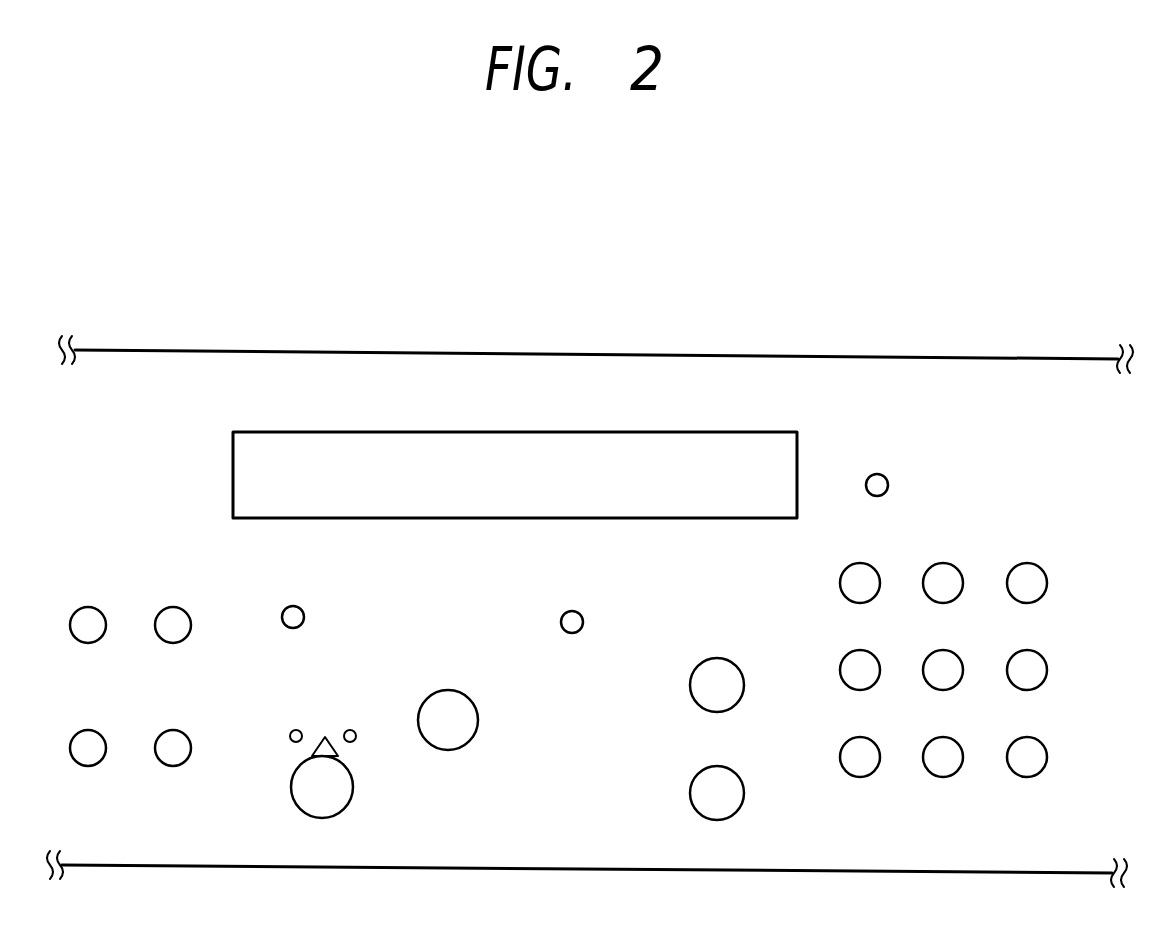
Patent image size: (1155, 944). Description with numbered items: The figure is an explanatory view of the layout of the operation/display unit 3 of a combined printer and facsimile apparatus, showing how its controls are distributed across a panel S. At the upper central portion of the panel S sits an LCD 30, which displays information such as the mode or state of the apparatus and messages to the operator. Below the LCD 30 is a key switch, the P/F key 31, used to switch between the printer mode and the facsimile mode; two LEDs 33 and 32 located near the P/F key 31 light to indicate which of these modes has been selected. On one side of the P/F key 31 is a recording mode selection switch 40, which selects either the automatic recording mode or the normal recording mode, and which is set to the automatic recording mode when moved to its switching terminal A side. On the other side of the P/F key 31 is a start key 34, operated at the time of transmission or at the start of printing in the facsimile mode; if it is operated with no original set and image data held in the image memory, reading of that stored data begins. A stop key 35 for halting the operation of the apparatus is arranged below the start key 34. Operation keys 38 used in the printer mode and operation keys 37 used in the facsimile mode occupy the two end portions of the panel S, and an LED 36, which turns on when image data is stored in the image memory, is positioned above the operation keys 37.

The operation/display unit 3 is at (533, 323).
The panel S is at (850, 390).
The LCD 30 is at (677, 432).
The key switch (P/F key) 31 is at (450, 751).
The LED 32 is at (581, 613).
The LED 33 is at (302, 608).
The start key 34 is at (723, 659).
The stop key 35 is at (690, 795).
The LED 36 is at (885, 477).
The operation keys 37 is at (1055, 795).
The operation keys 38 is at (53, 773).
The recording mode selection switch 40 is at (327, 818).